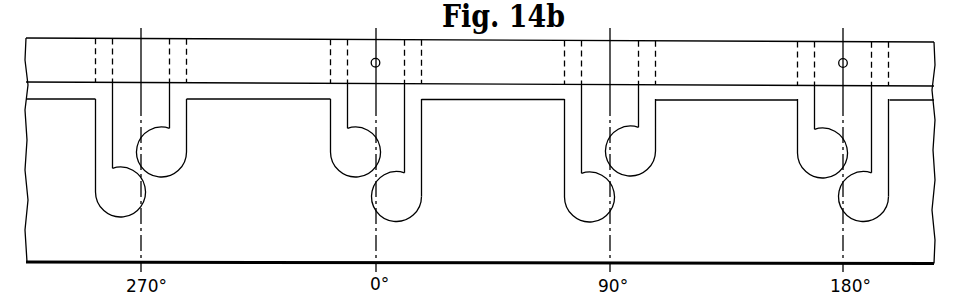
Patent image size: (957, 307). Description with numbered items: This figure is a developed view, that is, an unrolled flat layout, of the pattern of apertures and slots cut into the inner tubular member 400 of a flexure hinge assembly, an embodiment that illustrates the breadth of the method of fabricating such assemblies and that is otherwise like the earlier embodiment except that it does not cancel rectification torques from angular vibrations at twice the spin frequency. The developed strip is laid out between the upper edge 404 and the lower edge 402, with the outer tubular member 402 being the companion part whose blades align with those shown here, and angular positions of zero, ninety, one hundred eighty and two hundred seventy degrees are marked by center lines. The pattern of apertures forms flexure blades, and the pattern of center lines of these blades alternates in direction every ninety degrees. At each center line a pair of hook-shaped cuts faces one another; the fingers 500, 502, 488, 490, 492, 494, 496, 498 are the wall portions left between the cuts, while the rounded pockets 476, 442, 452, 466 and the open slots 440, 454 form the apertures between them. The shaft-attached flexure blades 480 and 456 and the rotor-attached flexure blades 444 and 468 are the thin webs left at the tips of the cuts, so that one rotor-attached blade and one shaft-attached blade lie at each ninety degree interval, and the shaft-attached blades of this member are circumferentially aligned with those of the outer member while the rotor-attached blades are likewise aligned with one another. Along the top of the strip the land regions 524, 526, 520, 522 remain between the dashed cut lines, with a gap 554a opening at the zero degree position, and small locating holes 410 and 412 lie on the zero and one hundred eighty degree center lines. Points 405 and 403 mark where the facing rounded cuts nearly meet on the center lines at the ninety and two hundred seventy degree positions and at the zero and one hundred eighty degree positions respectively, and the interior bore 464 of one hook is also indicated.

The inner tubular member 400 is at (265, 2).
The outer tubular member 402 is at (264, 271).
The pin at 0/180 degree position 403 is at (377, 168).
The upper edge 404 is at (729, 43).
The pin at 90/270 degree position 405 is at (142, 169).
The locating pin 410 is at (380, 63).
The locating pin 412 is at (839, 65).
The slot 440 is at (259, 180).
The pocket 442 is at (405, 210).
The rotor-attached flexure blade 444 is at (363, 182).
The pocket 452 is at (583, 213).
The slot 454 is at (726, 180).
The shaft-attached flexure blade 456 is at (623, 185).
The hook bore 464 is at (805, 163).
The pocket 466 is at (879, 210).
The rotor-attached flexure blade 468 is at (830, 183).
The pocket 476 is at (112, 212).
The shaft-attached flexure blade 480 is at (157, 183).
The finger 488 is at (332, 115).
The finger 490 is at (417, 147).
The finger 492 is at (575, 148).
The finger 494 is at (648, 118).
The finger 496 is at (800, 118).
The finger 498 is at (884, 148).
The finger 500 is at (97, 125).
The finger 502 is at (182, 115).
The land 520 is at (510, 90).
The land 522 is at (727, 90).
The land 524 is at (46, 88).
The land 526 is at (237, 88).
The gap 554a is at (365, 99).